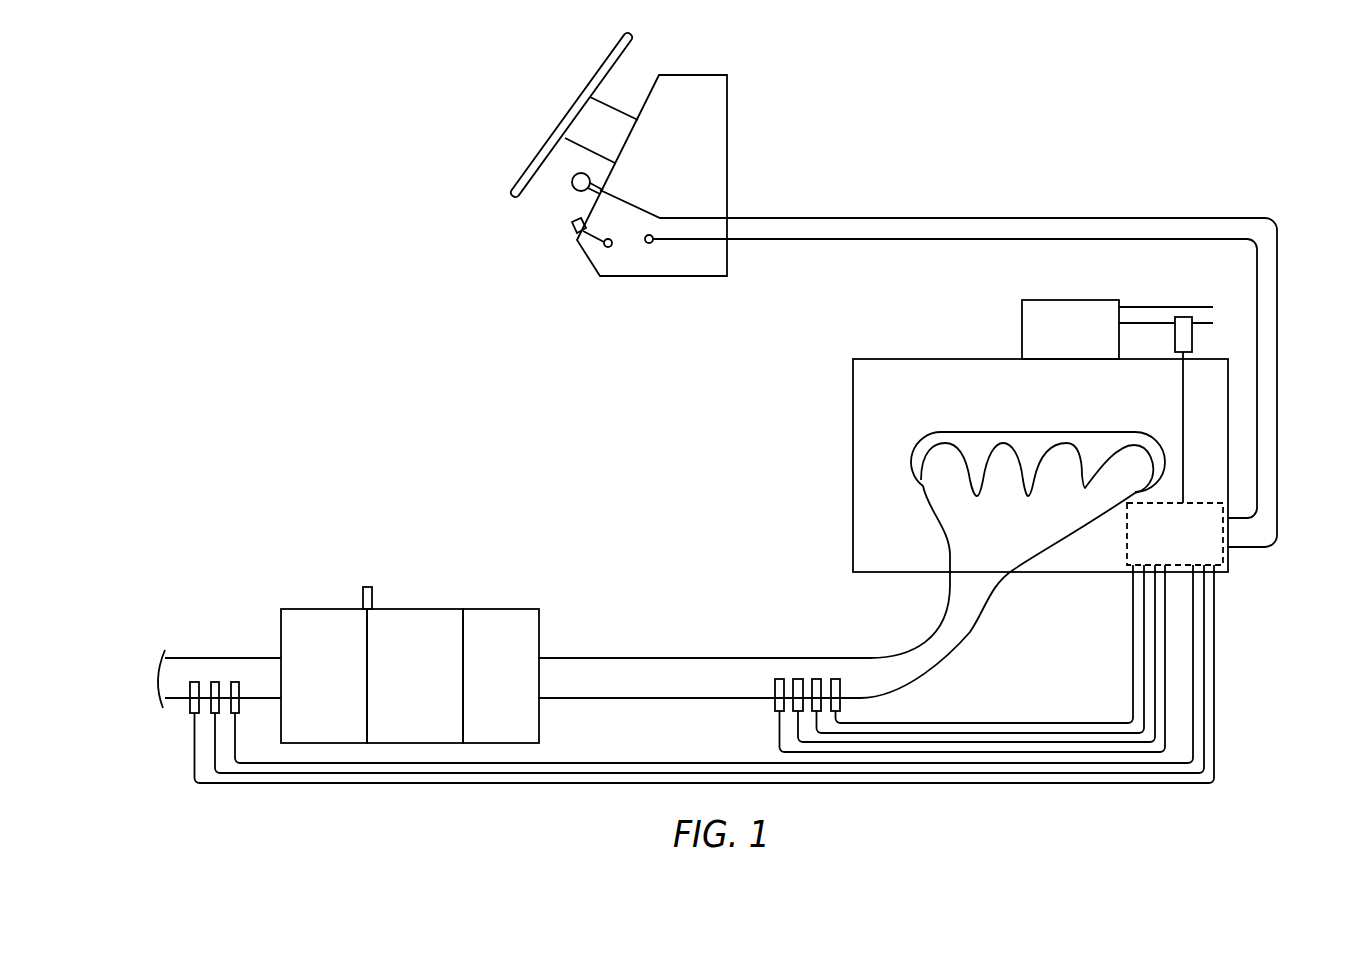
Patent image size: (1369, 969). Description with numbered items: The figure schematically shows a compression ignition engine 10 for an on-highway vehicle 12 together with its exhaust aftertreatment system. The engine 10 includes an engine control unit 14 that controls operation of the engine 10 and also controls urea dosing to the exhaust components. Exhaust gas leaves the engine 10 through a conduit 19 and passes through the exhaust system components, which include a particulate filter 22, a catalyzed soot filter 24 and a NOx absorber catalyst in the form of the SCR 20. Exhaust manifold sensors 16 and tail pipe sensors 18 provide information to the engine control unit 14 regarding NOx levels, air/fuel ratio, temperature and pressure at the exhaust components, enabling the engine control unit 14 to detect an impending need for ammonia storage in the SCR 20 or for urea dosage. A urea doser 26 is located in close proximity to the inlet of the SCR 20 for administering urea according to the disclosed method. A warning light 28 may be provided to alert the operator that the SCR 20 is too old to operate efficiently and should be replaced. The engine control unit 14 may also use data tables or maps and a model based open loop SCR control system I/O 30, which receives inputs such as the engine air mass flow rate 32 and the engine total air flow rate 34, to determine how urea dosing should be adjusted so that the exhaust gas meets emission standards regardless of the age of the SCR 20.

The compression ignition engine 10 is at (867, 392).
The on-highway vehicle 12 is at (727, 136).
The engine control unit 14 is at (1213, 552).
The exhaust manifold sensors 16 is at (781, 712).
The tail pipe sensors 18 is at (233, 681).
The conduit 19 is at (666, 657).
The SCR 20 is at (323, 609).
The particulate filter 22 is at (415, 609).
The catalyzed soot filter 24 is at (497, 609).
The urea doser 26 is at (369, 587).
The warning light 28 is at (650, 247).
The model based open loop SCR control system I/O 30 is at (1193, 339).
The engine air mass flow rate 32 is at (1149, 317).
The engine total air flow rate 34 is at (1033, 325).